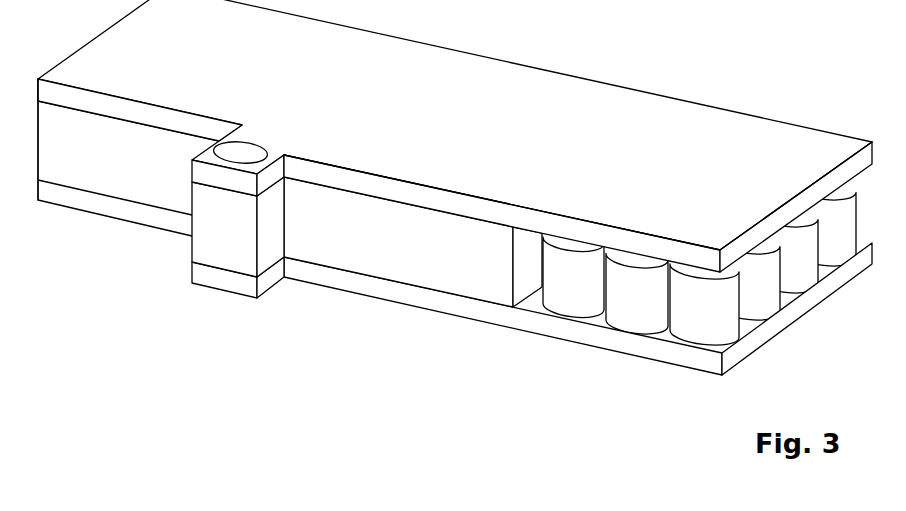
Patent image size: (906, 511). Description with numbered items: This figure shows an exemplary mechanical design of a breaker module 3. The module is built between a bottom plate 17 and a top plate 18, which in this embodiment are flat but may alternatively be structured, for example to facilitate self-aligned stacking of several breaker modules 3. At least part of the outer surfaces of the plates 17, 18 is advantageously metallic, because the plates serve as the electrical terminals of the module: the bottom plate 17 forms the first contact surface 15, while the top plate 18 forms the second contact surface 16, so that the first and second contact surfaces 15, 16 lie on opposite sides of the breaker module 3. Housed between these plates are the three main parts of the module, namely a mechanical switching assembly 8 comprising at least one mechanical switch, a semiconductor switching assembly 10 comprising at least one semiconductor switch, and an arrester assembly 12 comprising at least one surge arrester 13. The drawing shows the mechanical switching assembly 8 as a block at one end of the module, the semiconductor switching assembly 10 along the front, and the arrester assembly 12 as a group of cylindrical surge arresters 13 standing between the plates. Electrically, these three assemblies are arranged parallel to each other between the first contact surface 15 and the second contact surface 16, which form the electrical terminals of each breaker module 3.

The breaker module 3 is at (163, 307).
The mechanical switching assembly 8 is at (125, 166).
The semiconductor switching assembly 10 is at (413, 250).
The arrester assembly 12 is at (578, 288).
The surge arrester 13 is at (763, 290).
The first contact surface 15 is at (328, 290).
The second contact surface 16 is at (487, 85).
The bottom plate 17 is at (457, 305).
The top plate 18 is at (692, 100).